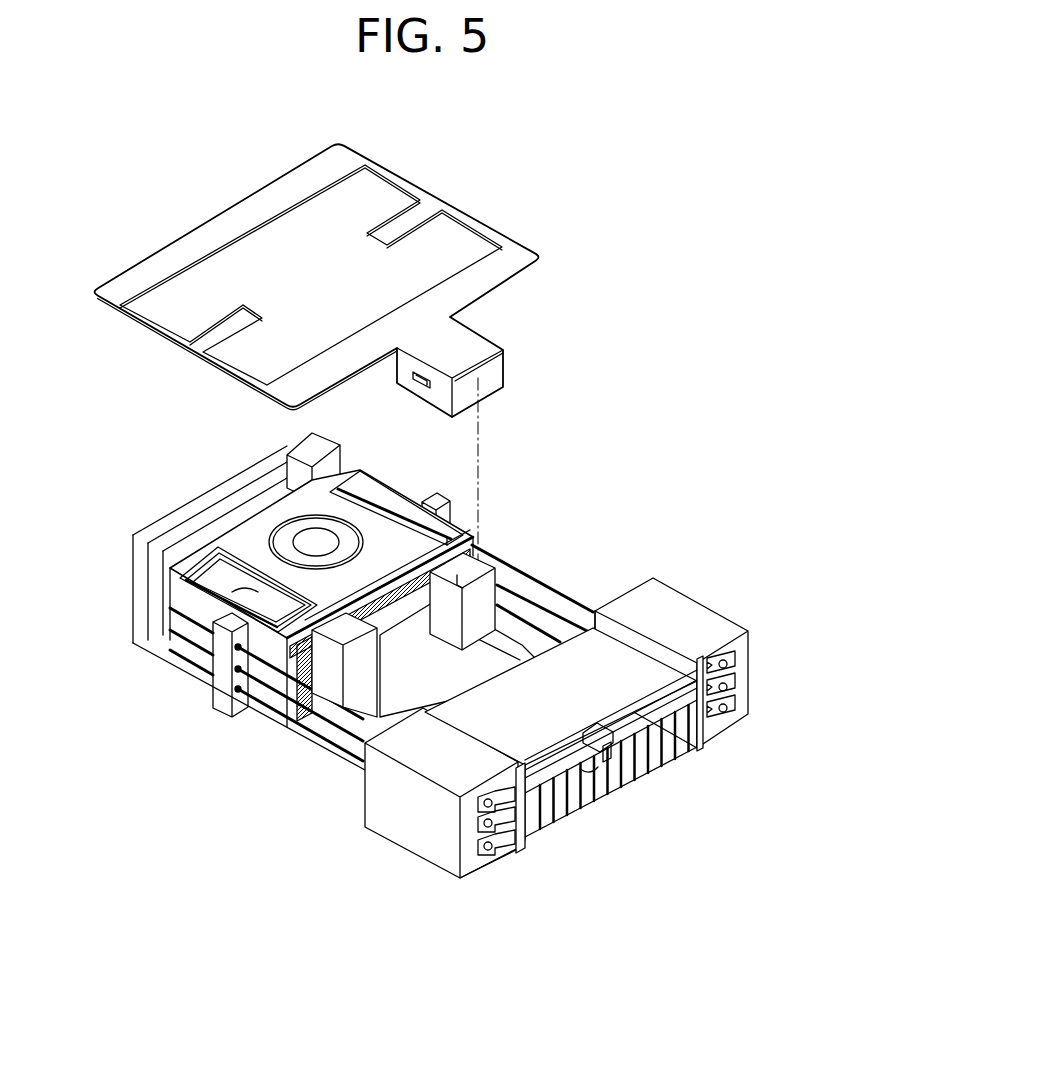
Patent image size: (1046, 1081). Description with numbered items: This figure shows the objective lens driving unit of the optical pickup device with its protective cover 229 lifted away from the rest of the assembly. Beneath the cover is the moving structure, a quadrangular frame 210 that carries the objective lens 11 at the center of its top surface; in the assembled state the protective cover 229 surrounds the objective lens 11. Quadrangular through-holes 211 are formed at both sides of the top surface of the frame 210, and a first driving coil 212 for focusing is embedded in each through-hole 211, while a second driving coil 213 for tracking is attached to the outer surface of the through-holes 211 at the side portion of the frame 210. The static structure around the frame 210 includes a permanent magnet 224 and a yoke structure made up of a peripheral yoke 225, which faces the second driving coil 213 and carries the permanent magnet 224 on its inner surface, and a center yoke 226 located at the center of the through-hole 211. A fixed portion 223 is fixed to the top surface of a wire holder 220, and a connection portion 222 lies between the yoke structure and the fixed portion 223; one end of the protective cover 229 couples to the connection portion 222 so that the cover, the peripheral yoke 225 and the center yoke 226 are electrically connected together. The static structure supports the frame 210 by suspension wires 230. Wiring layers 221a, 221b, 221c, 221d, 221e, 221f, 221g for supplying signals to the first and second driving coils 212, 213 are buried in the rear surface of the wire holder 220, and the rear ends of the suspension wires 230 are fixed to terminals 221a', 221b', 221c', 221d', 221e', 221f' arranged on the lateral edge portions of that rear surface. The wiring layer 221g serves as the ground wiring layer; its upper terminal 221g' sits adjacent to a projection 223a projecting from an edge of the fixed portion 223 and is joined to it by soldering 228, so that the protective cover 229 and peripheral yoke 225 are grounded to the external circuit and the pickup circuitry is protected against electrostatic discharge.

The protective cover 229 is at (222, 215).
The peripheral yoke 225 is at (237, 482).
The frame 210 is at (282, 500).
The permanent magnet 224 is at (330, 452).
The through-hole 211 is at (237, 557).
The first driving coil 212 is at (193, 573).
The objective lens 11 is at (327, 542).
The center yoke 226 is at (382, 513).
The suspension wire 230 is at (563, 637).
The connection portion 222 is at (487, 637).
The second driving coil 213 is at (160, 607).
The wire holder 220 is at (680, 602).
The fixed portion 223 is at (597, 653).
The soldering 228 is at (613, 702).
The projection 223a is at (598, 733).
The wiring layer 221a is at (541, 840).
The wiring layer 221b is at (576, 821).
The wiring layer 221c is at (615, 827).
The wiring layer 221d is at (670, 799).
The wiring layer 221e is at (688, 767).
The wiring layer 221f is at (727, 748).
The ground wiring layer 221g is at (631, 793).
The terminal 221a' is at (471, 881).
The terminal 221b' is at (442, 857).
The terminal 221c' is at (422, 831).
The terminal 221d' is at (772, 662).
The terminal 221e' is at (772, 690).
The terminal 221f' is at (769, 720).
The upper terminal 221g' is at (554, 740).